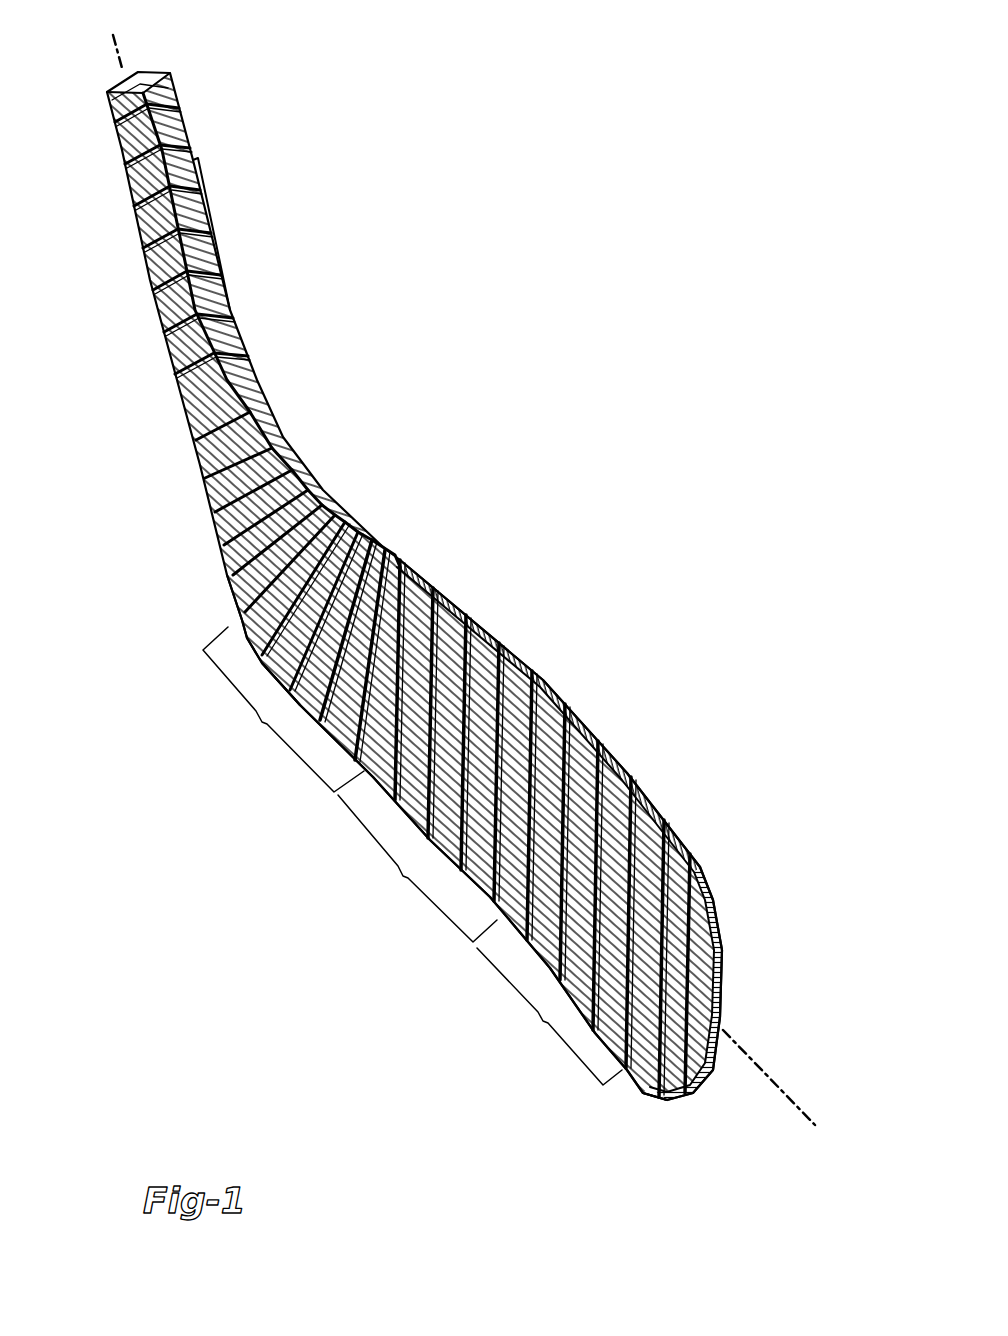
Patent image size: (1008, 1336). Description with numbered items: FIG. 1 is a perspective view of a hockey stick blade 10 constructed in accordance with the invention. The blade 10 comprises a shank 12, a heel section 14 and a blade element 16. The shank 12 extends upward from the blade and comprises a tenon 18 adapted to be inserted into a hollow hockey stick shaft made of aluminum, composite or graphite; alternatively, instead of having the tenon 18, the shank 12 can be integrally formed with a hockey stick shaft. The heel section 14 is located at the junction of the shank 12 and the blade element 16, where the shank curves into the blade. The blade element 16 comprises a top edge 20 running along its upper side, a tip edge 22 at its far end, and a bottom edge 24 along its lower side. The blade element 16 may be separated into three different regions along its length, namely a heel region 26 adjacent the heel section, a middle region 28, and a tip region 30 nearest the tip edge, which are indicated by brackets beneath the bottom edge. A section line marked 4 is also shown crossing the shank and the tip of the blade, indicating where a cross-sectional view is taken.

The section line 4- 4 is at (162, 25).
The hockey stick blade 10 is at (707, 357).
The shank 12 is at (233, 293).
The heel section 14 is at (242, 618).
The blade element 16 is at (515, 650).
The tenon 18 is at (187, 143).
The top edge 20 is at (425, 577).
The tip edge 22 is at (723, 963).
The bottom edge 24 is at (633, 1087).
The heel region 26 is at (283, 709).
The middle region 28 is at (417, 868).
The tip region 30 is at (549, 1016).